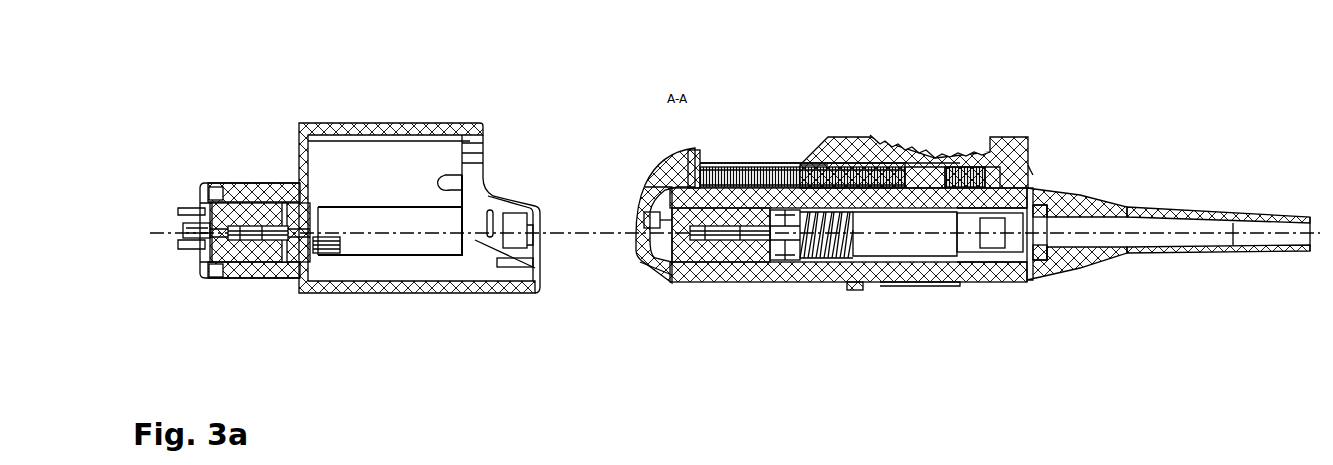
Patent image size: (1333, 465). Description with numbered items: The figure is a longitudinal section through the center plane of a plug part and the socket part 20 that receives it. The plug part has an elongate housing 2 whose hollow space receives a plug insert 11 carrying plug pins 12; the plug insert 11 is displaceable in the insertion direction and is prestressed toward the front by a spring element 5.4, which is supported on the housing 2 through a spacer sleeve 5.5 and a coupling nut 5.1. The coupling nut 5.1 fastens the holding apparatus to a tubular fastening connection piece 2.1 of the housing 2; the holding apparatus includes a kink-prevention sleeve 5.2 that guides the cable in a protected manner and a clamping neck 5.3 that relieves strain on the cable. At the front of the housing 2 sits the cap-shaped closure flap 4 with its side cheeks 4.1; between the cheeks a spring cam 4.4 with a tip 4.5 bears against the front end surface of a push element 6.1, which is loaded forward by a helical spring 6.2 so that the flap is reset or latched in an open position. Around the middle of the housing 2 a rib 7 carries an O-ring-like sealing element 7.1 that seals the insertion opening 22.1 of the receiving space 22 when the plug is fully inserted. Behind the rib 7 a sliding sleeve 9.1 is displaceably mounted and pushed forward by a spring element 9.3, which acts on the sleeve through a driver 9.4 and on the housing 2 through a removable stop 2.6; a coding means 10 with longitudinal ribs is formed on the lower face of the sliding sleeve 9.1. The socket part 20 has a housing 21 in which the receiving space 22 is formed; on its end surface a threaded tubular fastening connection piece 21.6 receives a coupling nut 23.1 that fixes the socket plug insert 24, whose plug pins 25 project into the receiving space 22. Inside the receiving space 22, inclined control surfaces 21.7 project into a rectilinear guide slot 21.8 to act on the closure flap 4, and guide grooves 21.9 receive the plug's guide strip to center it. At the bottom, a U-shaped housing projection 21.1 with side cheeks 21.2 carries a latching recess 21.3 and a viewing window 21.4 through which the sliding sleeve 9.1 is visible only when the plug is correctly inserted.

The socket part 20 is at (311, 111).
The housing 21 is at (398, 296).
The housing projection 21.1 is at (472, 298).
The side cheeks 21.2 is at (555, 240).
The latching recess 21.3 is at (533, 240).
The viewing window 21.4 is at (528, 172).
The tubular fastening connection piece 21.6 is at (250, 185).
The control surfaces 21.7 is at (500, 170).
The guide slot 21.8 is at (520, 172).
The guide grooves 21.9 is at (433, 298).
The receiving space 22 is at (387, 178).
The insertion opening 22.1 is at (488, 162).
The coupling nut 23.1 is at (228, 185).
The plug insert 24 is at (235, 280).
The plug pins 25 is at (300, 290).
The housing 2 is at (752, 282).
The tubular fastening connection piece 2.1 is at (1010, 270).
The stop 2.6 is at (1030, 167).
The closure flap 4 is at (648, 285).
The side cheeks 4.1 is at (700, 152).
The spring cam 4.4 is at (663, 155).
The tip 4.5 is at (692, 150).
The coupling nut 5.1 is at (1040, 270).
The kink-prevention sleeve 5.2 is at (1182, 255).
The clamping neck 5.3 is at (1088, 265).
The spring element 5.4 is at (800, 265).
The spacer sleeve 5.5 is at (903, 282).
The push element 6.1 is at (725, 165).
The helical spring 6.2 is at (760, 165).
The rib 7 is at (840, 135).
The sealing element 7.1 is at (828, 137).
The sliding sleeve 9.1 is at (1012, 137).
The spring element 9.3 is at (960, 165).
The driver 9.4 is at (945, 158).
The coding means 10 is at (853, 290).
The plug insert 11 is at (720, 265).
The plug pins 12 is at (685, 265).